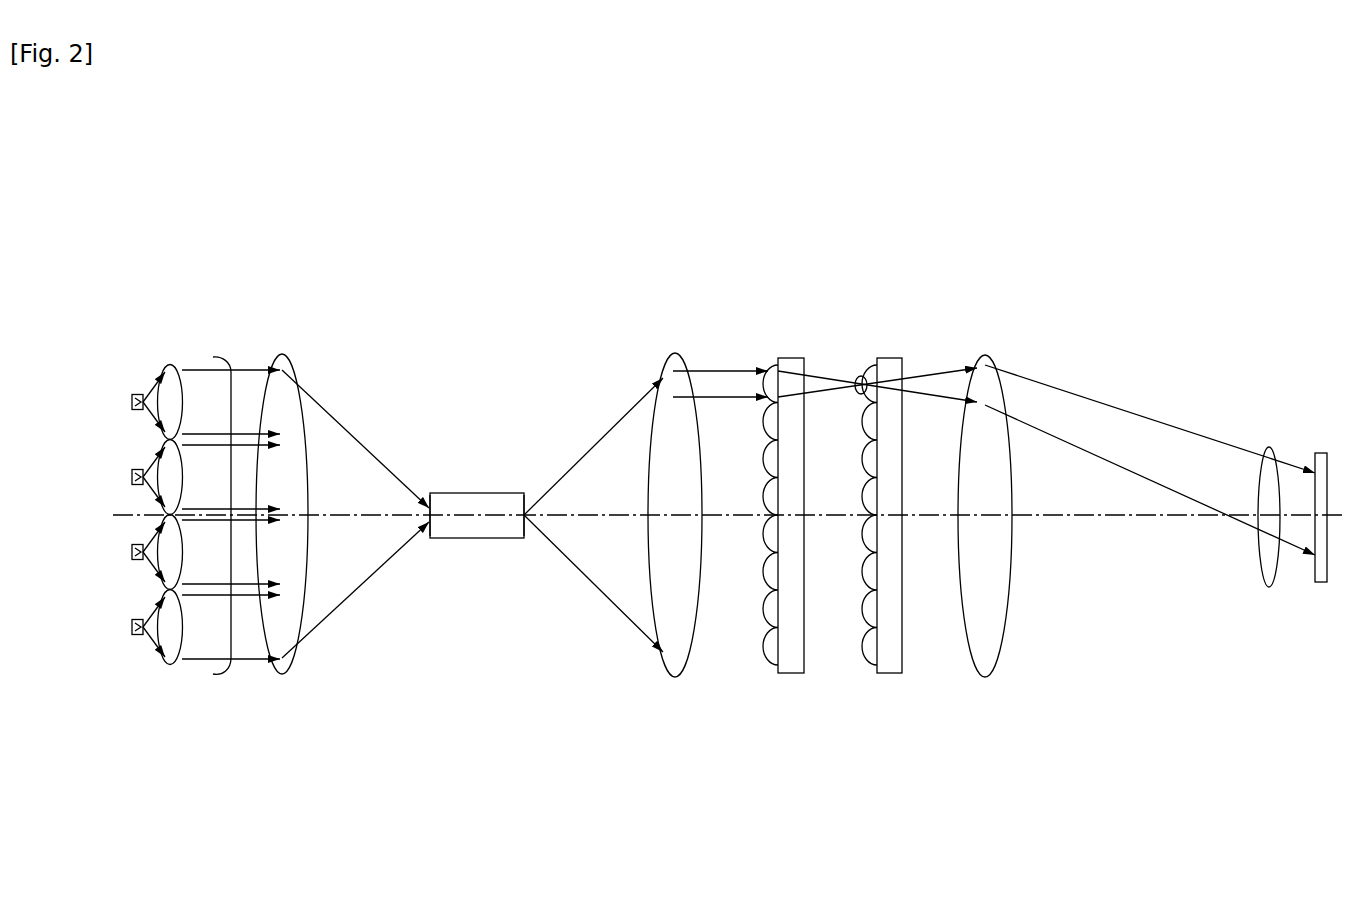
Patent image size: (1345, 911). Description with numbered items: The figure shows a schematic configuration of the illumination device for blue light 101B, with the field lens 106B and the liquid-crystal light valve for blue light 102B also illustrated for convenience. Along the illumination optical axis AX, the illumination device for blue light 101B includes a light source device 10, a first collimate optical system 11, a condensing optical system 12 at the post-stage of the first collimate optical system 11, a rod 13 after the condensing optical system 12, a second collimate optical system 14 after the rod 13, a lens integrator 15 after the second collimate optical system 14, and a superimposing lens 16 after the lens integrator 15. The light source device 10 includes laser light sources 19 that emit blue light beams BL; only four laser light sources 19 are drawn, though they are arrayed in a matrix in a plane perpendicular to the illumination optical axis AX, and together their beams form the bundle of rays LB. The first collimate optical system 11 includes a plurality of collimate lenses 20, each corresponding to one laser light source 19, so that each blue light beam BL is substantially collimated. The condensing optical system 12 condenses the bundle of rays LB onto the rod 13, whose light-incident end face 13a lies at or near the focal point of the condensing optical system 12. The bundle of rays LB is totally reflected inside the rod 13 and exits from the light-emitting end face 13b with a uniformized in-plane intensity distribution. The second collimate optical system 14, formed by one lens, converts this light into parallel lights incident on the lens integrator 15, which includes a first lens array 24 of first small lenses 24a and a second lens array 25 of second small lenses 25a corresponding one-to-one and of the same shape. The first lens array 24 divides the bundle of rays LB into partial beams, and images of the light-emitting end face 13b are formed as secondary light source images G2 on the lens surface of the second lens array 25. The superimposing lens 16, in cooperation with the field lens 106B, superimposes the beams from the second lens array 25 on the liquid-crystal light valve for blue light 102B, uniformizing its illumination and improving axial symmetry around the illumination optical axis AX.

The light source device 10 is at (130, 544).
The first collimate optical system 11 is at (183, 535).
The condensing optical system 12 is at (283, 677).
The rod 13 is at (477, 520).
The light-incident end face 13a is at (428, 495).
The light-emitting end face 13b is at (526, 495).
The second collimate optical system 14 is at (677, 677).
The lens integrator 15 is at (829, 543).
The superimposing lens 16 is at (985, 678).
The laser light source 19 is at (135, 390).
The collimate lens 20 is at (180, 385).
The first lens array 24 is at (780, 522).
The first small lens 24a is at (773, 365).
The second lens array 25 is at (880, 522).
The second small lens 25a is at (870, 365).
The secondary light source image G2 is at (857, 375).
The illumination optical axis AX is at (1143, 522).
The blue light beam BL is at (150, 375).
The bundle of rays LB is at (229, 352).
The illumination device for blue light 101B is at (1224, 285).
The liquid-crystal light valve for blue light 102B is at (1323, 583).
The field lens 106B is at (1272, 588).